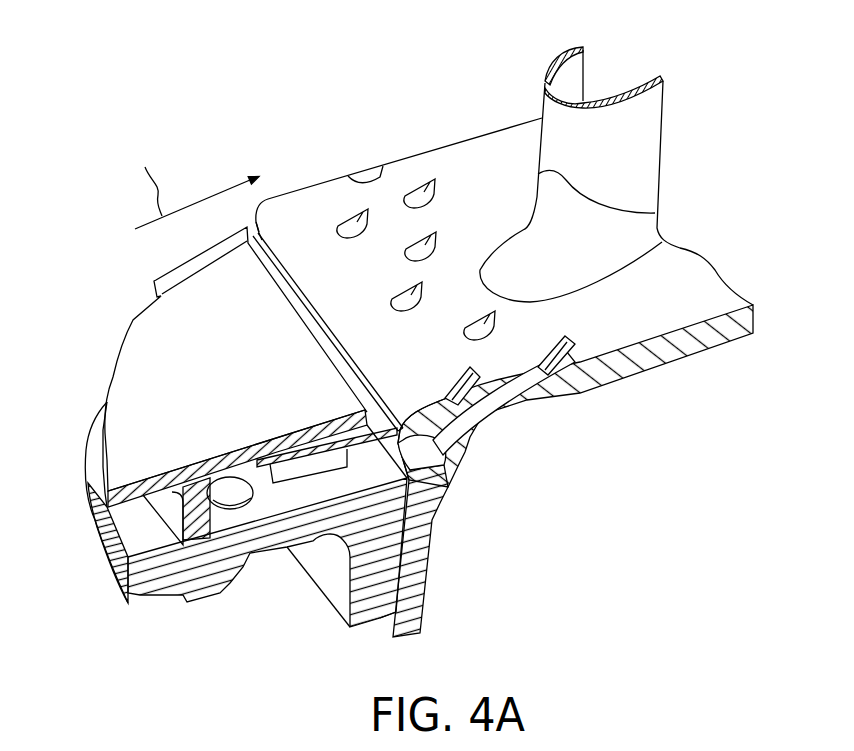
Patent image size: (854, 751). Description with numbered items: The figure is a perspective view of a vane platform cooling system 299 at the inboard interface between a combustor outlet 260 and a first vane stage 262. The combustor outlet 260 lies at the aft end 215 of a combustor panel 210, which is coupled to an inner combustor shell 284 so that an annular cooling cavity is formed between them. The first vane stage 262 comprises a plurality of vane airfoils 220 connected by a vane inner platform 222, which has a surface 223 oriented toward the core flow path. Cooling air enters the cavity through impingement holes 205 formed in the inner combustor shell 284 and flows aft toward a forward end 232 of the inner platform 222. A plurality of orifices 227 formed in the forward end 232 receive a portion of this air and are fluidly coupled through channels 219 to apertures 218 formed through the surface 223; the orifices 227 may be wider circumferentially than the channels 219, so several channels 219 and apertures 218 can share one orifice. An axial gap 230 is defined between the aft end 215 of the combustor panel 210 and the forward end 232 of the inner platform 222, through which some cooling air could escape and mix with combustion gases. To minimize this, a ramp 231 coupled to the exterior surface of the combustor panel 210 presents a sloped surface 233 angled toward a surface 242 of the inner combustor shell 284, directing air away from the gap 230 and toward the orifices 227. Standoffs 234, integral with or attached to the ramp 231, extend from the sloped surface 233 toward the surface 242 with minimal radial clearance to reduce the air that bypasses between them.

The vane platform cooling system 299 is at (182, 72).
The first vane stage 262 is at (308, 158).
The combustor outlet 260 is at (120, 270).
The aft end 215 is at (264, 240).
The combustor panel 210 is at (186, 325).
The vane inner platform 222 is at (479, 140).
The surface 223 is at (469, 190).
The vane airfoil 220 is at (586, 157).
The apertures 218 is at (358, 219).
The gap 230 is at (352, 345).
The ramp 231 is at (348, 434).
The impingement holes 205 is at (236, 475).
The forward end 232 is at (400, 422).
The sloped surface 233 is at (363, 440).
The standoffs 234 is at (297, 470).
The surface 242 is at (121, 537).
The inner combustor shell 284 is at (135, 604).
The orifices 227 is at (434, 462).
The channels 219 is at (516, 407).